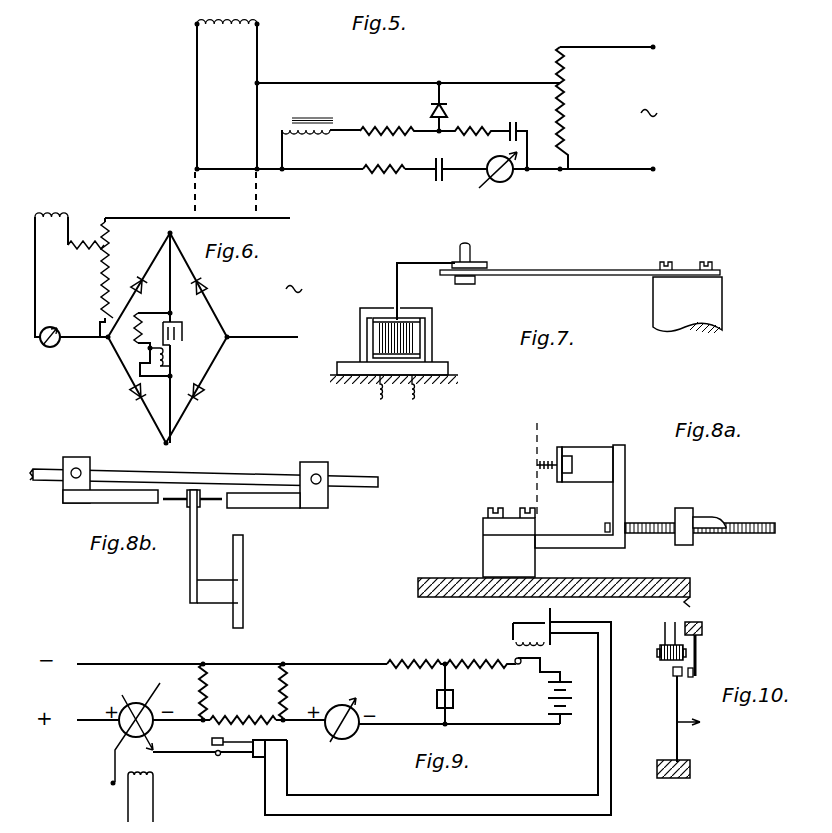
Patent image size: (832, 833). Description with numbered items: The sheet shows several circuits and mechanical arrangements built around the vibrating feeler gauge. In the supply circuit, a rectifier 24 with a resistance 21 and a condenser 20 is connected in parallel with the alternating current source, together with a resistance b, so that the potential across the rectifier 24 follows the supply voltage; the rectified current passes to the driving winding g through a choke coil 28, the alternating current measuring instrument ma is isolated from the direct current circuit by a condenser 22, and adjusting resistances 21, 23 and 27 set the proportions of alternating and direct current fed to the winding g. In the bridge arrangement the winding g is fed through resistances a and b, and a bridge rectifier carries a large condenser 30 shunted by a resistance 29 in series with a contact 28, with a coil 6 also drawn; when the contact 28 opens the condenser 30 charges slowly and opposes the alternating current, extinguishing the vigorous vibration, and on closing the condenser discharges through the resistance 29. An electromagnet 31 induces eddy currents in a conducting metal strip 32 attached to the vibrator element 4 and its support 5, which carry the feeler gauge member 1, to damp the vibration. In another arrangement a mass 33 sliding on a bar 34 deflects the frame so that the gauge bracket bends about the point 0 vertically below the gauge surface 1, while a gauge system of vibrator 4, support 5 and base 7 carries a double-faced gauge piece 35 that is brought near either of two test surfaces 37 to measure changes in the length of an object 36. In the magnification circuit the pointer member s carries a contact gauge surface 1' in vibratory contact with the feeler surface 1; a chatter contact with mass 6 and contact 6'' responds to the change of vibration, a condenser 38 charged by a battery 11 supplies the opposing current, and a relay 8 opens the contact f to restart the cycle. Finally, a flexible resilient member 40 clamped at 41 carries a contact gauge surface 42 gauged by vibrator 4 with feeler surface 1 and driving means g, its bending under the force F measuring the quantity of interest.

In FIG. 5, the driving winding g is at (241, 25).
In FIG. 6, the driving winding g is at (51, 213).
In FIG. 9, the driving winding g is at (141, 769).
In FIG. 10, the driving winding g is at (660, 650).
In FIG. 5, the choke coil 28 is at (313, 117).
In FIG. 6, the choke coil 28 is at (169, 319).
In FIG. 5, the adjusting resistance 27 is at (389, 129).
In FIG. 5, the rectifier 24 is at (448, 112).
In FIG. 5, the resistance 21 is at (485, 129).
In FIG. 5, the condenser 20 is at (520, 128).
In FIG. 5, the resistor b is at (566, 118).
In FIG. 6, the resistor b is at (112, 270).
In FIG. 5, the adjusting resistance 23 is at (406, 175).
In FIG. 5, the condenser 22 is at (444, 176).
In FIG. 5, the A. C. measuring instrument ma is at (505, 183).
In FIG. 6, the A. C. measuring instrument ma is at (44, 347).
In FIG. 9, the A. C. measuring instrument ma is at (356, 738).
In FIG. 6, the resistor a is at (86, 237).
In FIG. 6, the resistance 29 is at (134, 322).
In FIG. 6, the large condenser 30 is at (185, 333).
In FIG. 6, the chatter contact mass 6 is at (178, 358).
In FIG. 9, the chatter contact mass 6 is at (222, 735).
In FIG. 7, the conducting metal strip 32 is at (397, 293).
In FIG. 7, the electromagnet 31 is at (433, 326).
In FIG. 7, the feeler gauge member 1 is at (470, 262).
In FIG. 8A, the feeler gauge member 1 is at (535, 466).
In FIG. 9, the feeler gauge member 1 is at (168, 775).
In FIG. 10, the feeler gauge member 1 is at (703, 667).
In FIG. 7, the vibrator element 4 is at (565, 270).
In FIG. 8A, the vibrator element 4 is at (562, 448).
In FIG. 8B, the vibrator element 4 is at (190, 549).
In FIG. 10, the vibrator element 4 is at (700, 652).
In FIG. 7, the support 5 is at (682, 295).
In FIG. 8A, the support 5 is at (597, 447).
In FIG. 8B, the support 5 is at (205, 605).
In FIG. 8A, the bending point 0 is at (540, 542).
In FIG. 8A, the mass 33 is at (685, 508).
In FIG. 8A, the bar 34 is at (745, 522).
In FIG. 8B, the object 36 is at (241, 465).
In FIG. 8B, the test surfaces 37 is at (68, 497).
In FIG. 8B, the double-faced gauge piece 35 is at (180, 503).
In FIG. 8B, the base 7 is at (243, 561).
In FIG. 9, the member s is at (141, 709).
In FIG. 9, the contact gauge surface 1' is at (143, 734).
In FIG. 9, the contact 6'' is at (229, 773).
In FIG. 9, the large condenser 38 is at (437, 698).
In FIG. 9, the contact f is at (514, 660).
In FIG. 9, the relay 8 is at (513, 626).
In FIG. 9, the battery 11 is at (568, 718).
In FIG. 10, the contact gauge surface 42 is at (673, 671).
In FIG. 10, the flexible resilient member 40 is at (676, 710).
In FIG. 10, the clamping point 41 is at (681, 762).
In FIG. 10, the force F is at (696, 722).